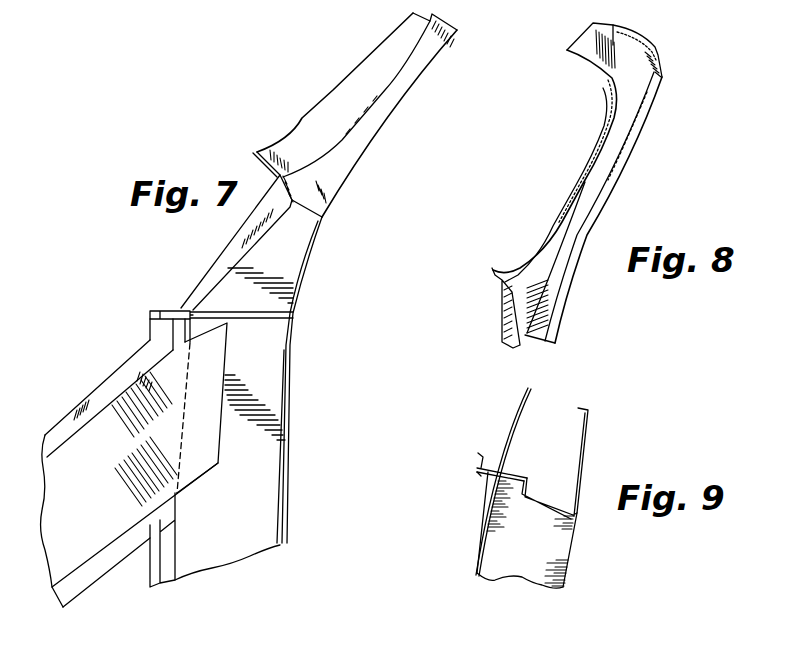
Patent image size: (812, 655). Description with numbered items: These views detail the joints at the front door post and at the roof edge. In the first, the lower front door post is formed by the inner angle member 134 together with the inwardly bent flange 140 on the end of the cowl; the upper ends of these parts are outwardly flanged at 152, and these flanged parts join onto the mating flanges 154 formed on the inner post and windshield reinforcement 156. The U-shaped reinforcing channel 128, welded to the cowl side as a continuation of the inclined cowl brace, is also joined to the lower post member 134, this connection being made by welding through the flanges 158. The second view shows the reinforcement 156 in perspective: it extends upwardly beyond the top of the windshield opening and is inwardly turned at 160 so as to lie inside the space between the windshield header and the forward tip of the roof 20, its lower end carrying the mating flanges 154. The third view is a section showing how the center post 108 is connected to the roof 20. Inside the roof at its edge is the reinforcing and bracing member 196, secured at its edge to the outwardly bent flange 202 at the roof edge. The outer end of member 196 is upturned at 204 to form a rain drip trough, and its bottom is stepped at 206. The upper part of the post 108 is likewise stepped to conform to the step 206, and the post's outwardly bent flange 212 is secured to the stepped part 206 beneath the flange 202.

In FIG. 7, the inner post and windshield reinforcement 156 is at (397, 95).
In FIG. 8, the inner post and windshield reinforcement 156 is at (592, 170).
In FIG. 7, the inwardly bent flange 140 is at (287, 443).
In FIG. 7, the mating flanges 154 is at (170, 311).
In FIG. 8, the mating flanges 154 is at (502, 333).
In FIG. 7, the outwardly flanged upper end 152 is at (150, 332).
In FIG. 7, the U-shaped reinforcing channel 128 is at (75, 557).
In FIG. 7, the flanges 158 is at (202, 463).
In FIG. 7, the inner angle member 134 is at (192, 552).
In FIG. 8, the inwardly turned portion 160 is at (595, 42).
In FIG. 9, the roof 20 is at (517, 415).
In FIG. 9, the center post 108 is at (485, 530).
In FIG. 9, the outwardly bent flange 202 is at (492, 467).
In FIG. 9, the upturned outer end 204 is at (478, 458).
In FIG. 9, the outwardly bent flange 212 is at (480, 476).
In FIG. 9, the stepped part 206 is at (517, 476).
In FIG. 9, the reinforcing and bracing member 196 is at (586, 470).